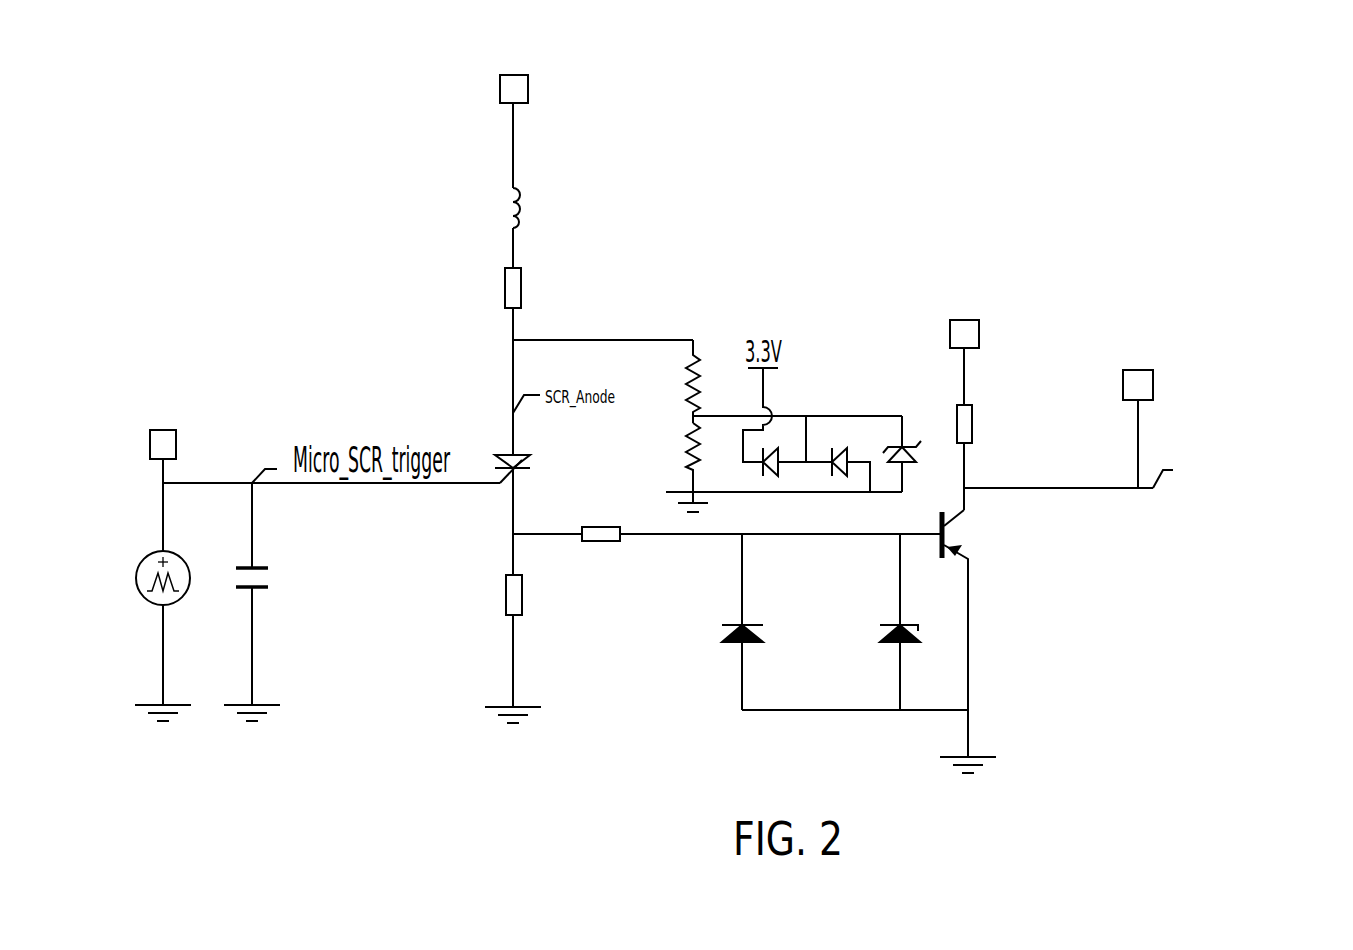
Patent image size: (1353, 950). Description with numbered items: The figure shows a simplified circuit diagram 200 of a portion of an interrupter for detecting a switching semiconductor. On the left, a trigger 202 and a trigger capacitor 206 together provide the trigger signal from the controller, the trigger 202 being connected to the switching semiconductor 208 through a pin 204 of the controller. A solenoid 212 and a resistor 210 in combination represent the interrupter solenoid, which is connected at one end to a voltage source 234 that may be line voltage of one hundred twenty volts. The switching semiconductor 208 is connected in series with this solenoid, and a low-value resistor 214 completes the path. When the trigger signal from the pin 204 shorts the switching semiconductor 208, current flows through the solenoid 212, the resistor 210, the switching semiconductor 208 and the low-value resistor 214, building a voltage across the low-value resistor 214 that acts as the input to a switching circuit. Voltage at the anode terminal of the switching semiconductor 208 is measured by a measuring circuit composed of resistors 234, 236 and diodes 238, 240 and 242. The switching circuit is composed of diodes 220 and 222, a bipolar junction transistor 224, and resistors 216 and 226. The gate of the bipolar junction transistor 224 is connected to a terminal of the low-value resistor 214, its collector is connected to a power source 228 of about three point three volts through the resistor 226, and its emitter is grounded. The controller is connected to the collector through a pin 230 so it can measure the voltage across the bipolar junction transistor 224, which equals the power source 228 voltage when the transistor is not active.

The circuit diagram 200 is at (978, 104).
The trigger 202 is at (135, 575).
The pin 204 is at (167, 382).
The trigger capacitor 206 is at (270, 578).
The switching semiconductor 208 is at (507, 452).
The resistor 210 is at (504, 295).
The solenoid 212 is at (510, 205).
The low-value resistor 214 is at (505, 603).
The resistor 216 is at (622, 542).
The diode 220 is at (725, 645).
The diode 222 is at (880, 637).
The bipolar junction transistor 224 is at (968, 550).
The resistor 226 is at (975, 425).
The power source 228 is at (981, 333).
The pin 230 is at (1157, 390).
The voltage source 234 is at (530, 90).
The resistor 236 is at (688, 460).
The diode 238 is at (769, 448).
The diode 240 is at (843, 448).
The diode 242 is at (905, 440).